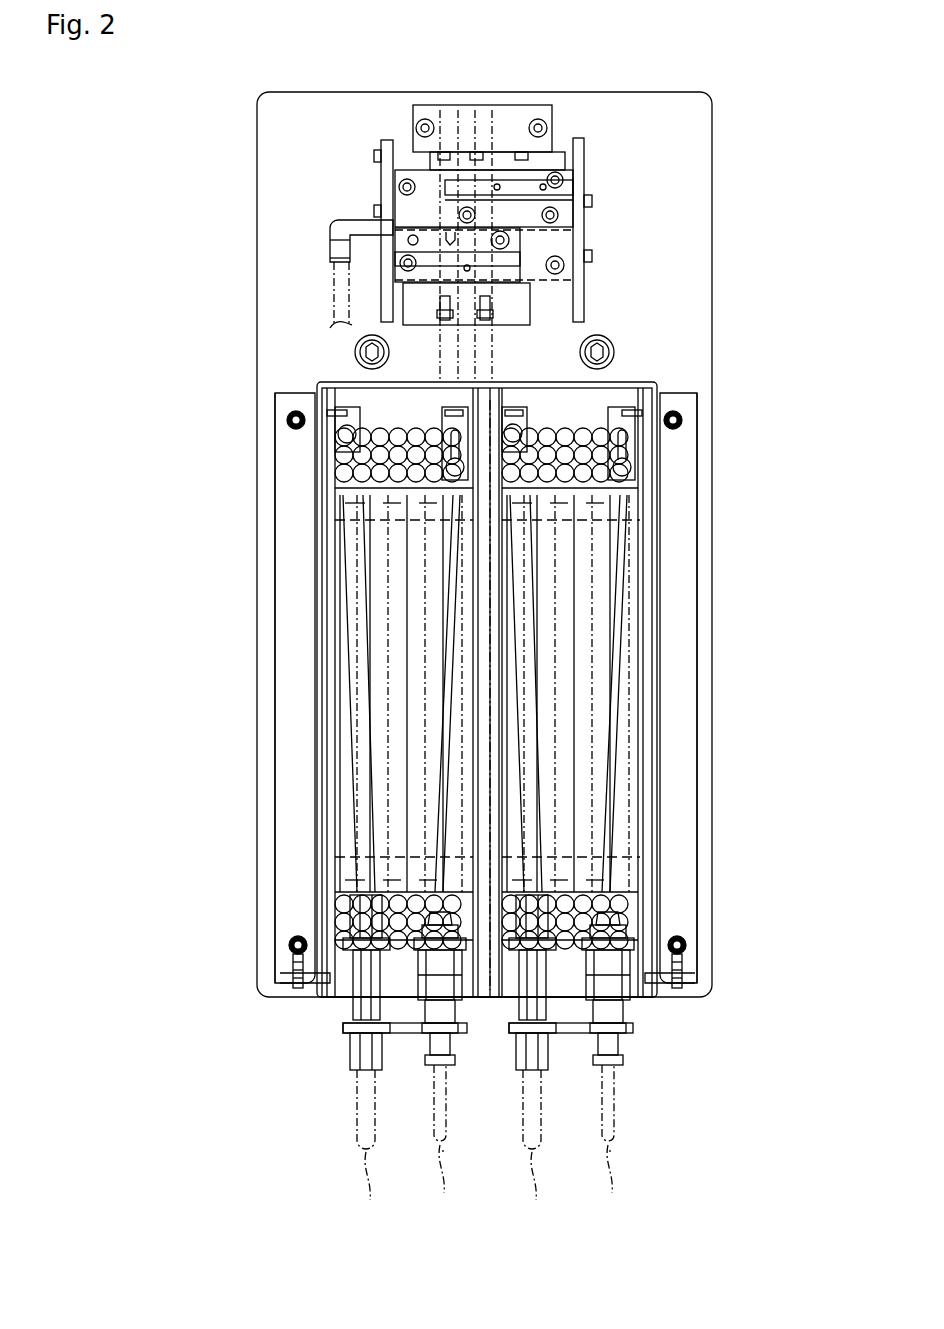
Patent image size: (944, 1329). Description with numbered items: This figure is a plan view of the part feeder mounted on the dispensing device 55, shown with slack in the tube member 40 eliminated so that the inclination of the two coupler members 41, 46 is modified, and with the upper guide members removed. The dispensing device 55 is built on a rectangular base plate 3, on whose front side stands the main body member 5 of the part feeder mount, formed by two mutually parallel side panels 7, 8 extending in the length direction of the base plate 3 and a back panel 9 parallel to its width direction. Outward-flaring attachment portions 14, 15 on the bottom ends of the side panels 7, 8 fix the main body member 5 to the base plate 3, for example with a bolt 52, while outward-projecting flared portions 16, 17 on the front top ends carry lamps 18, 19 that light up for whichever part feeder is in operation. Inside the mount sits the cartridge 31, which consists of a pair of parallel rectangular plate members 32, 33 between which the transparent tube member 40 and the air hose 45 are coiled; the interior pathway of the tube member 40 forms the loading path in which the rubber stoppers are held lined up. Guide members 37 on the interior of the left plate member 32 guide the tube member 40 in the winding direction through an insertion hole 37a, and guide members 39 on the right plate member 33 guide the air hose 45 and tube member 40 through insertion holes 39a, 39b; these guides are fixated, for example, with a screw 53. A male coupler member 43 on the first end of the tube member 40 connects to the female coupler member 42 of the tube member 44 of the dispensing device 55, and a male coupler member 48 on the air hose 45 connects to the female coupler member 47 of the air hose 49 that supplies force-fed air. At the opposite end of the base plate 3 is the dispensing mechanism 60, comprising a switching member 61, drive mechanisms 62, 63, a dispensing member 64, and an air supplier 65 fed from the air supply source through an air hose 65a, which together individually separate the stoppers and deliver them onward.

The base plate 3 is at (697, 265).
The main body member 5 is at (472, 688).
The side panel 7 is at (325, 690).
The side panel 8 is at (655, 715).
The back panel 9 is at (535, 383).
The attachment portion 14 is at (290, 775).
The attachment portion 15 is at (693, 757).
The flared portion 16 is at (290, 980).
The flared portion 17 is at (652, 985).
The lamp 18 is at (300, 990).
The lamp 19 is at (680, 990).
The cartridge 31 is at (478, 707).
The plate member 32 is at (500, 597).
The plate member 33 is at (640, 618).
The guide member 37 is at (345, 407).
The insertion hole 37a is at (345, 436).
The guide member 39 is at (620, 407).
The insertion hole 39a is at (640, 412).
The insertion hole 39b is at (624, 468).
The tube member 40 is at (635, 672).
The coupler member 41 is at (353, 1047).
The female coupler member 42 is at (440, 965).
The male coupler member 43 is at (350, 990).
The tube member 44 is at (448, 382).
The air hose 45 is at (622, 448).
The coupler member 46 is at (617, 1047).
The female coupler member 47 is at (540, 990).
The male coupler member 48 is at (612, 965).
The air hose 49 is at (533, 1194).
The bolt 52 is at (290, 422).
The screw 53 is at (333, 413).
The dispensing device 55 is at (760, 108).
The dispensing mechanism 60 is at (622, 148).
The switching member 61 is at (522, 320).
The drive mechanism 62 is at (500, 240).
The drive mechanism 63 is at (560, 205).
The dispensing member 64 is at (552, 150).
The air supplier 65 is at (335, 225).
The air hose 65a is at (335, 285).